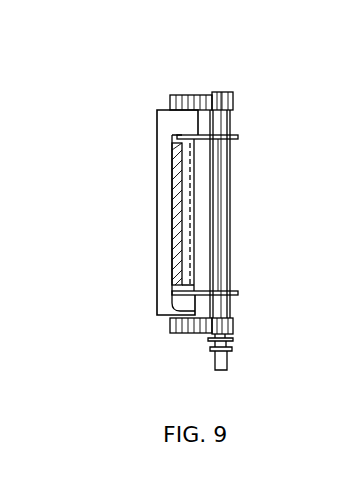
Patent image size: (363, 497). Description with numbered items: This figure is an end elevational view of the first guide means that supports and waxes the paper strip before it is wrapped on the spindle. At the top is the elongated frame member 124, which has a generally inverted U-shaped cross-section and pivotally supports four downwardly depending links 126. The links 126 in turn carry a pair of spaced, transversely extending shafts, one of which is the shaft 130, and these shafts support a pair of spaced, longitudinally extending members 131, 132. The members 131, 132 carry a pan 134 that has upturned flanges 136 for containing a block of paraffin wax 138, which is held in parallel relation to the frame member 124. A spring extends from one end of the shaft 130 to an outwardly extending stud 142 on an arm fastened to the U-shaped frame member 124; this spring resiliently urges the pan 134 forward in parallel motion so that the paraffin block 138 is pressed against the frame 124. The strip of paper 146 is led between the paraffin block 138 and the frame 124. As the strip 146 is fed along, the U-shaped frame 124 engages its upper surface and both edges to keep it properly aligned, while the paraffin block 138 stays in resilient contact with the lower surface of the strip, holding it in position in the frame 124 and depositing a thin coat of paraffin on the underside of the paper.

The frame member 124 is at (180, 120).
The links 126 is at (184, 94).
The shaft 130 is at (229, 250).
The member 131 is at (236, 294).
The member 132 is at (229, 134).
The pan 134 is at (222, 172).
The upturned flanges 136 is at (187, 250).
The block of paraffin wax 138 is at (185, 190).
The stud 142 is at (228, 365).
The strip of paper 146 is at (184, 306).